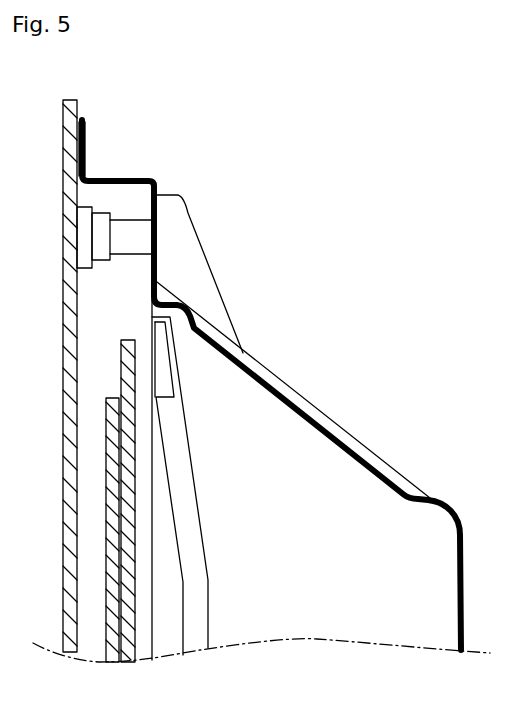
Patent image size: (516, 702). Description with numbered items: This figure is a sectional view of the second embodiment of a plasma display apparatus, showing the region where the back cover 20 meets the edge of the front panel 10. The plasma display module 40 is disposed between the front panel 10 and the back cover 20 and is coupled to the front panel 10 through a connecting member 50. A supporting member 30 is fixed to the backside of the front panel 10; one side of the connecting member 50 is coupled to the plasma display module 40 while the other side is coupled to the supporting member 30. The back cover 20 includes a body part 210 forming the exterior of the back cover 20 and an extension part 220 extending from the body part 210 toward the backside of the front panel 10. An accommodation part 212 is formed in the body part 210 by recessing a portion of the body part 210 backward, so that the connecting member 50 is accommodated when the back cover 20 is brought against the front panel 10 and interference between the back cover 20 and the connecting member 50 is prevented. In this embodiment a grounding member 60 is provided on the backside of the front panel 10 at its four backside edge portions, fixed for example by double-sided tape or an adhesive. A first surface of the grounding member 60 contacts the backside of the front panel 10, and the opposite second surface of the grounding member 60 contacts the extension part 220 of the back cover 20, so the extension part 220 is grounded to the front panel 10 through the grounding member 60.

The front panel 10 is at (74, 100).
The back cover 20 is at (327, 426).
The supporting member 30 is at (85, 238).
The plasma display module 40 is at (84, 454).
The connecting member 50 is at (194, 531).
The grounding member 60 is at (72, 152).
The body part 210 is at (285, 392).
The accommodation part 212 is at (194, 240).
The extension part 220 is at (87, 149).